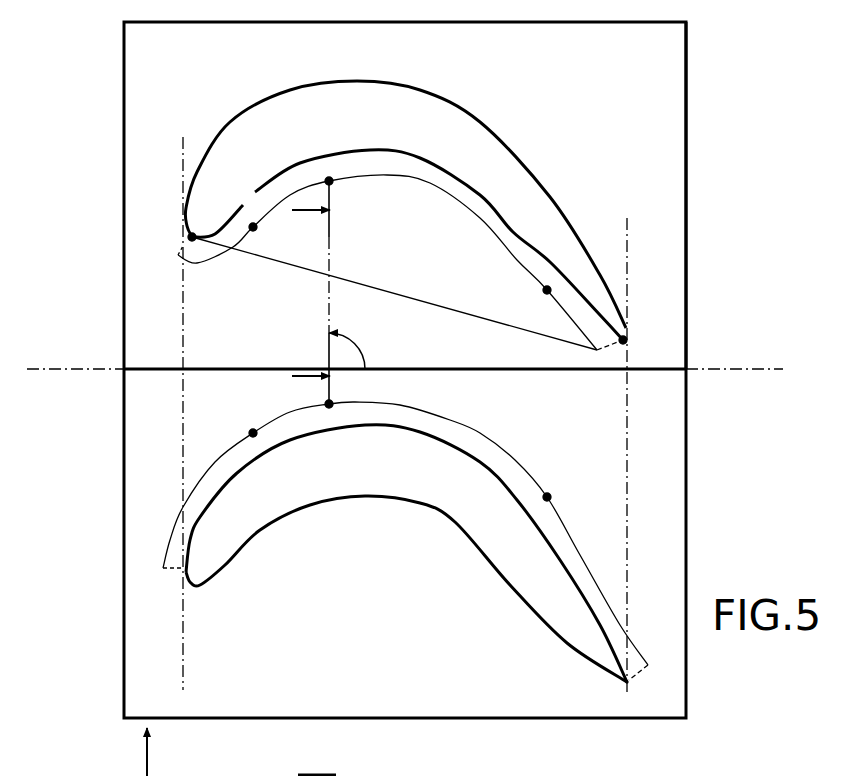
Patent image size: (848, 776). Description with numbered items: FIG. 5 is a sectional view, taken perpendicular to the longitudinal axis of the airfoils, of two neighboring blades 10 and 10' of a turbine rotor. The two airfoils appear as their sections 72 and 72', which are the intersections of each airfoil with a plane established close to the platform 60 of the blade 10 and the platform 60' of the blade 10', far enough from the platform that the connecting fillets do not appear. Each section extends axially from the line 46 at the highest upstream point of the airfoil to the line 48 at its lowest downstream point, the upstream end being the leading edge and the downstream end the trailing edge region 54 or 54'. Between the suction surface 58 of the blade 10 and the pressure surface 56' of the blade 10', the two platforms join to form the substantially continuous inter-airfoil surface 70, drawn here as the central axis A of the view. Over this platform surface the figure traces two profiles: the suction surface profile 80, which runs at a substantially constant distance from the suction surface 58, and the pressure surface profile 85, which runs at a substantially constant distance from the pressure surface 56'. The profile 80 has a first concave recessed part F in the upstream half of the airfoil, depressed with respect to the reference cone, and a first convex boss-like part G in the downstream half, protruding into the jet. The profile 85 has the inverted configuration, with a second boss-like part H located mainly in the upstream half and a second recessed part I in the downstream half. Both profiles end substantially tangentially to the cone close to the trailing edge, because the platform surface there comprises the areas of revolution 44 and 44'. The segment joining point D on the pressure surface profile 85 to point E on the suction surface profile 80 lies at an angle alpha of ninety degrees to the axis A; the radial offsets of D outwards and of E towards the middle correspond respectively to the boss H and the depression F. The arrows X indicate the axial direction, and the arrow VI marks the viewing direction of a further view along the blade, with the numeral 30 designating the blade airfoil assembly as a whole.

The blade 10 is at (420, 545).
The blade 10' is at (429, 244).
The airfoil body 30 is at (516, 385).
The area of revolution 44 is at (649, 627).
The area of revolution 44' is at (637, 306).
The line 46 is at (183, 177).
The line 48 is at (628, 246).
The trailing edge point 54 is at (651, 696).
The trailing edge point (mirrored) 54' is at (649, 350).
The pressure surface 56' is at (407, 245).
The suction surface 58 is at (237, 473).
The platform 60 is at (445, 370).
The platform 60' is at (729, 195).
The inter-airfoil surface 70 is at (228, 380).
The section 72 is at (406, 589).
The section 72' is at (405, 204).
The suction surface profile 80 is at (515, 460).
The pressure surface profile 85 is at (462, 210).
The axis A is at (46, 368).
The view direction VI is at (130, 752).
The second boss-like part H is at (253, 213).
The point D is at (337, 193).
The second recessed part I is at (538, 299).
The point E is at (336, 393).
The first concave recessed part F is at (248, 421).
The first convex boss-like part G is at (555, 486).
The axial direction X is at (305, 216).